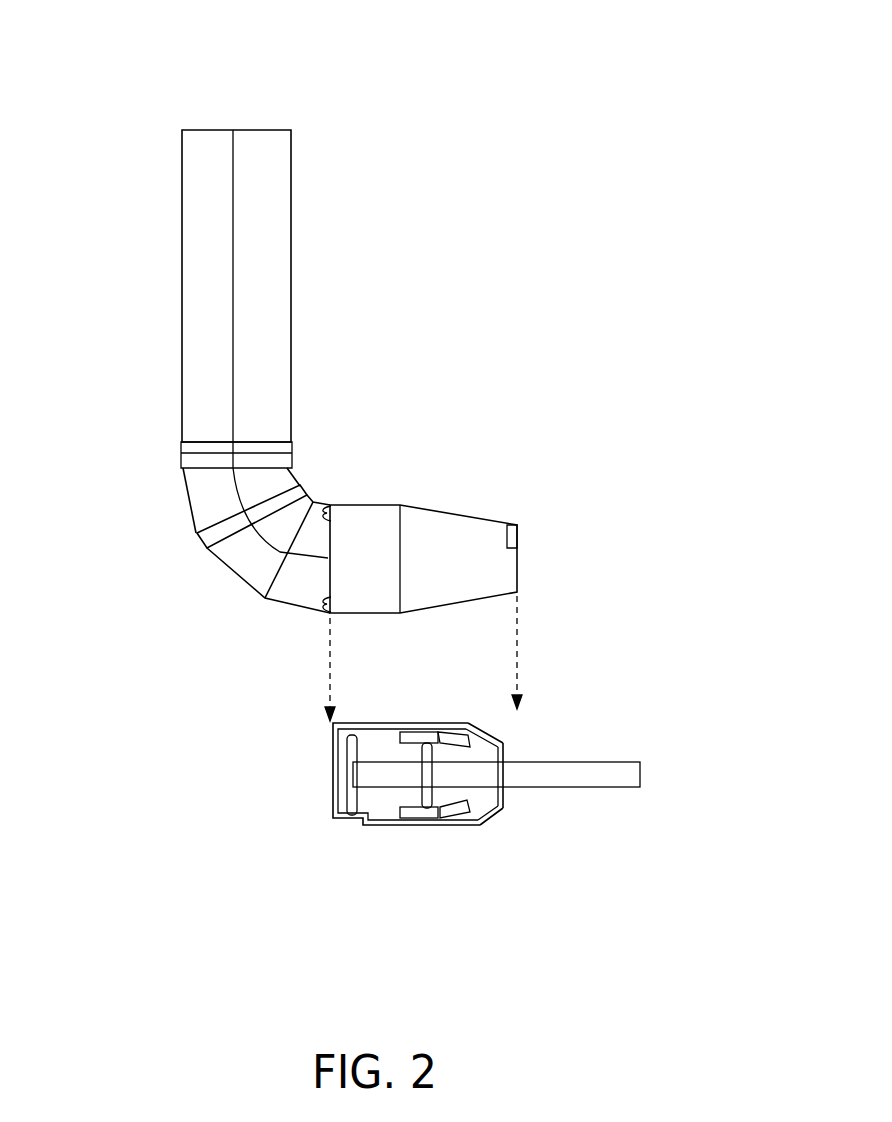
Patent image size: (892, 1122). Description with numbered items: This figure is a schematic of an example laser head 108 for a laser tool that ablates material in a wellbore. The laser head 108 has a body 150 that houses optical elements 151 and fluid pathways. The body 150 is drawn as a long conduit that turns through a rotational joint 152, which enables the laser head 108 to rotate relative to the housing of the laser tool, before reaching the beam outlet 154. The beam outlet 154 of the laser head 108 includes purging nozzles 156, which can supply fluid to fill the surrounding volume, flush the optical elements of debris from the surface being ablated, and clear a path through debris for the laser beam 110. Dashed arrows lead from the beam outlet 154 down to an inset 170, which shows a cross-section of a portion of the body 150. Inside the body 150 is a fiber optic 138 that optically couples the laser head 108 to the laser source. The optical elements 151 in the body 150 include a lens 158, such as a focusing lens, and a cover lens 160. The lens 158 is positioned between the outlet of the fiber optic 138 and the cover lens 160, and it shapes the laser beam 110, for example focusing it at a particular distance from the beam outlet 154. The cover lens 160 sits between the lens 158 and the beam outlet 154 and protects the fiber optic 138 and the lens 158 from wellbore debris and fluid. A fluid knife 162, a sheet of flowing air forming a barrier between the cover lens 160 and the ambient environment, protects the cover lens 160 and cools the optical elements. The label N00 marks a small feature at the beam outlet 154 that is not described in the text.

The laser head 108 is at (448, 85).
The laser beam 110 is at (580, 778).
The fiber optic 138 is at (233, 235).
The body 150 is at (289, 313).
The optical elements 151 is at (385, 836).
The rotational joint 152 is at (198, 530).
The beam outlet 154 is at (518, 561).
The purging nozzles 156 is at (505, 742).
The lens 158 is at (340, 820).
The cover lens 160 is at (428, 808).
The fluid knife 162 is at (447, 730).
The inset 170 is at (307, 773).
The stop tab N00 is at (517, 527).